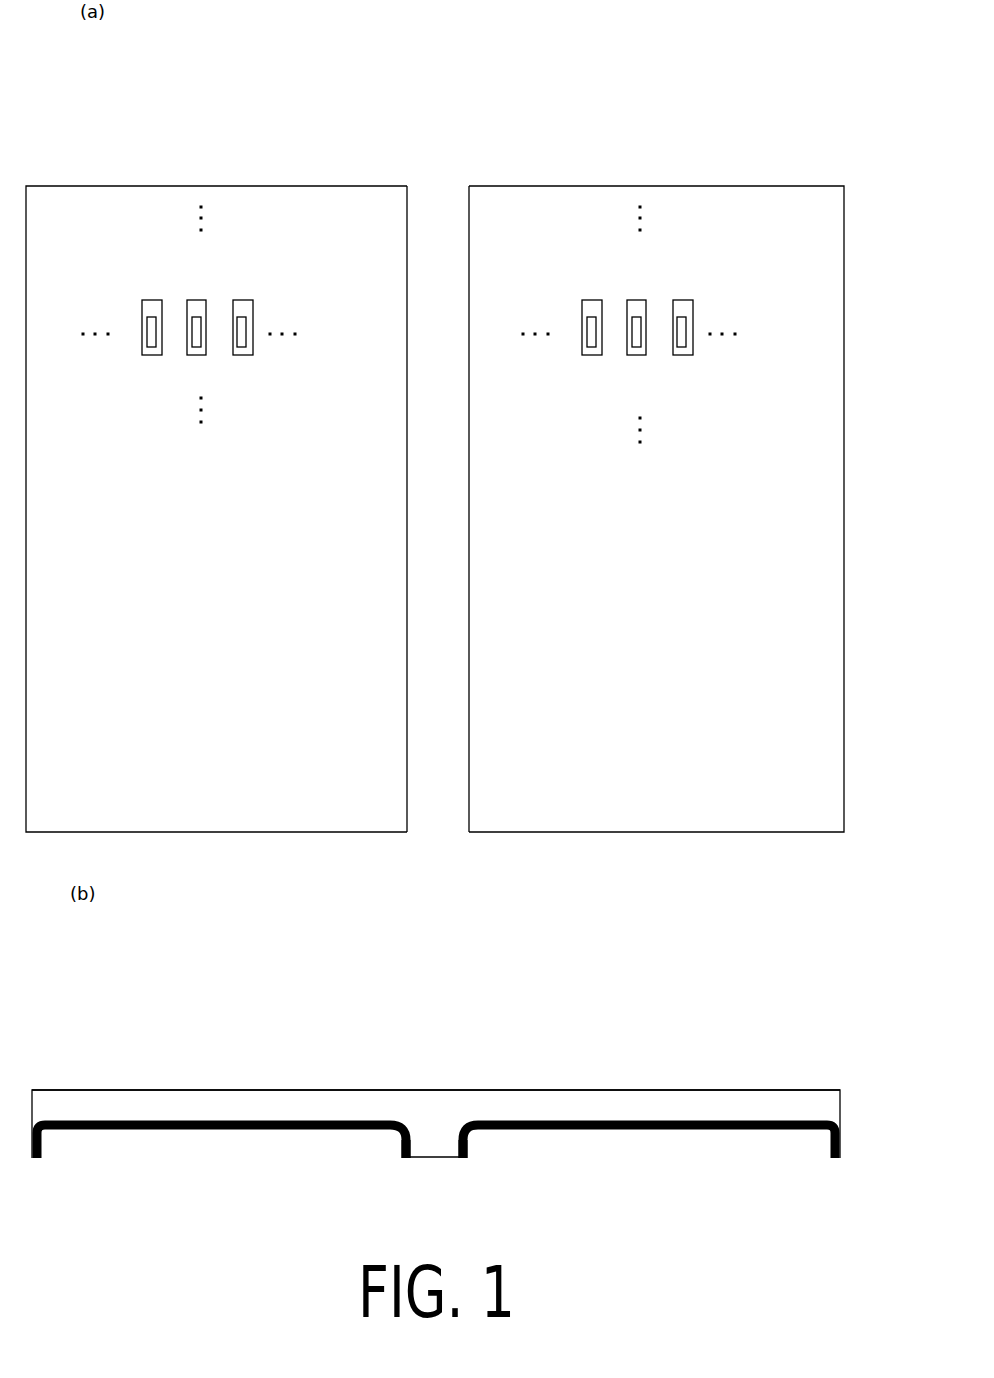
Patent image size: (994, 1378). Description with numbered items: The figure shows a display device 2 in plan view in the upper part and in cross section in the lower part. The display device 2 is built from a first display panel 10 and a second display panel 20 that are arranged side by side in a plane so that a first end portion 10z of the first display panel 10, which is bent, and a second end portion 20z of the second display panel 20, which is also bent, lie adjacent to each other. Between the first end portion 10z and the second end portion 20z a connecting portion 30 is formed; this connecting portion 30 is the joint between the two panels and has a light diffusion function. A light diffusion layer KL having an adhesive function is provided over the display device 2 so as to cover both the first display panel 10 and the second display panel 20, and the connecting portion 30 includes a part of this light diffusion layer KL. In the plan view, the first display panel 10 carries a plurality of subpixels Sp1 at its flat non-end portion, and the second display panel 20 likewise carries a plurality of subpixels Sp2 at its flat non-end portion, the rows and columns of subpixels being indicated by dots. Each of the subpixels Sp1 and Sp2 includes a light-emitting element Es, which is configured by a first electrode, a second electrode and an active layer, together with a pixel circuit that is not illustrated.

The display device 2 is at (445, 86).
The first display panel 10 is at (200, 186).
The second display panel 20 is at (625, 186).
The connecting portion 30 is at (433, 186).
The subpixels Sp1 is at (150, 300).
The subpixels Sp2 is at (590, 300).
The light-emitting element Es is at (153, 343).
The light diffusion layer KL is at (345, 1090).
The first end portion 10z is at (402, 1138).
The second end portion 20z is at (467, 1138).